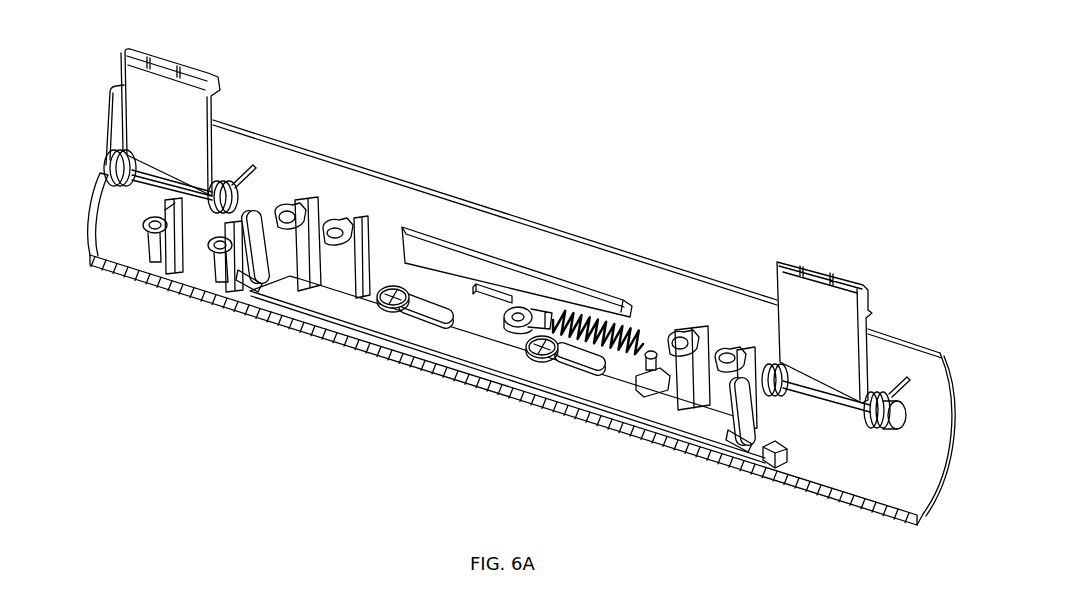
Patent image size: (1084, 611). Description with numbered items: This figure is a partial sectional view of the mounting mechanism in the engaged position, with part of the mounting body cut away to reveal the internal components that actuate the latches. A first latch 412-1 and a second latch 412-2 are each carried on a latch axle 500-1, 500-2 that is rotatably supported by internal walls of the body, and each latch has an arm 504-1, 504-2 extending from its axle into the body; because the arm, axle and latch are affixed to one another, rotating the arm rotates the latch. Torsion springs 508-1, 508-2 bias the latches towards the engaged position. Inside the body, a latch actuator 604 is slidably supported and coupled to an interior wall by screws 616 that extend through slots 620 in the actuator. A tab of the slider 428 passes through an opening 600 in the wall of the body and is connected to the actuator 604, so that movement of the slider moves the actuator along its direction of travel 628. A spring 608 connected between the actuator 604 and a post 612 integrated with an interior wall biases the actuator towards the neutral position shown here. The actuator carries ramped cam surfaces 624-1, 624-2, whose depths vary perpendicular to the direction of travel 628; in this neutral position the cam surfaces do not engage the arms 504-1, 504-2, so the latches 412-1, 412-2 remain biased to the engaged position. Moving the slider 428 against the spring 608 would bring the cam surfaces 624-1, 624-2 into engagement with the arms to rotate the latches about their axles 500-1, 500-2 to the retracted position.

The first latch 412-1 is at (825, 267).
The second latch 412-2 is at (222, 84).
The slider 428 is at (513, 306).
The latch axle 500-1 is at (897, 427).
The latch axle 500-2 is at (100, 173).
The arm 504-1 is at (753, 417).
The arm 504-2 is at (250, 285).
The torsion spring 508-1 is at (877, 405).
The torsion spring 508-2 is at (128, 160).
The opening 600 is at (497, 292).
The latch actuator 604 is at (476, 355).
The spring 608 is at (642, 332).
The post 612 is at (653, 340).
The screws 616 is at (388, 310).
The slots 620 is at (413, 313).
The cam surface 624-1 is at (750, 443).
The cam surface 624-2 is at (262, 282).
The direction of travel 628 is at (720, 483).